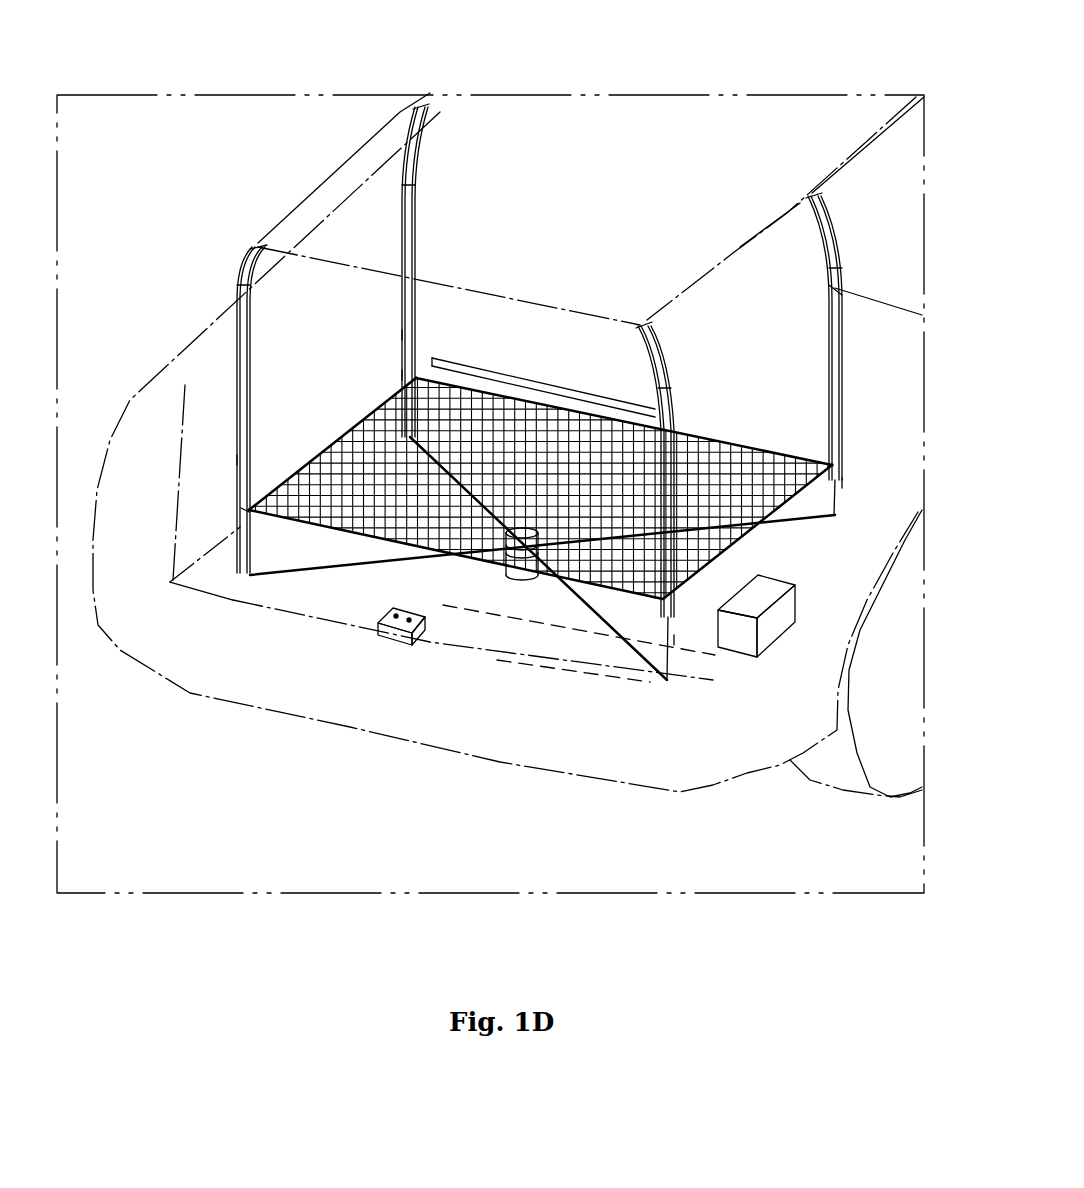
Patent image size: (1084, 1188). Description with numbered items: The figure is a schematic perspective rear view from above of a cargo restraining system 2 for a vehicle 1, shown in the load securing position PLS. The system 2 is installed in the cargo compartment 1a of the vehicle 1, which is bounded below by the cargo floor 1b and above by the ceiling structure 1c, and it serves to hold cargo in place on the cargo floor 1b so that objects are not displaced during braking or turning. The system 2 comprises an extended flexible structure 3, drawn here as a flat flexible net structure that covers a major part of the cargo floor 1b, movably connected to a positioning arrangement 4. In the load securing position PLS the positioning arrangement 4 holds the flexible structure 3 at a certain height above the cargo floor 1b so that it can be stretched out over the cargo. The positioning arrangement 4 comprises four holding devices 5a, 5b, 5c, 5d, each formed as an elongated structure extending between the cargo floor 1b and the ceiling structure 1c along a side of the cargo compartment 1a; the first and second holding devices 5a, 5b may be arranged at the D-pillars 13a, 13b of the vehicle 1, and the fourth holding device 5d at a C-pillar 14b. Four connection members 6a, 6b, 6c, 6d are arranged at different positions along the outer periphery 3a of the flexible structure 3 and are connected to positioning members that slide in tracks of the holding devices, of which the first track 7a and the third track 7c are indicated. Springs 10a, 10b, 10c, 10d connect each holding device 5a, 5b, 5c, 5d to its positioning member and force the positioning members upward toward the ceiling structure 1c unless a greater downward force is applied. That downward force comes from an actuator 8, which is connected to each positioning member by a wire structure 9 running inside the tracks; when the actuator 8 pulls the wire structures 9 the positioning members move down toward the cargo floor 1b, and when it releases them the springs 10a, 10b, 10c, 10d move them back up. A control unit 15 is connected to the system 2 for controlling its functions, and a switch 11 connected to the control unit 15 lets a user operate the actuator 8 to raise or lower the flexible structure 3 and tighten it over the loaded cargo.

The vehicle 1 is at (541, 346).
The cargo compartment 1a is at (501, 642).
The cargo floor 1b is at (448, 613).
The ceiling structure 1c is at (481, 184).
The cargo restraining system 2 is at (508, 445).
The flexible structure 3 is at (540, 307).
The outer periphery 3a is at (486, 467).
The positioning arrangement 4 is at (452, 488).
The first holding device 5a is at (202, 406).
The second holding device 5b is at (617, 597).
The third holding device 5c is at (446, 240).
The fourth holding device 5d is at (858, 542).
The first connection member 6a is at (149, 451).
The second connection member 6b is at (633, 767).
The third connection member 6c is at (251, 334).
The fourth connection member 6d is at (851, 672).
The first track 7a is at (161, 445).
The third track 7c is at (261, 312).
The actuator 8 is at (476, 678).
The wire structure 9 is at (422, 691).
The first spring 10a is at (269, 227).
The second spring 10b is at (701, 203).
The third spring 10c is at (337, 159).
The fourth spring 10d is at (781, 168).
The switch 11 is at (392, 714).
The D-pillar 13a is at (366, 382).
The D-pillar 13b is at (583, 722).
The C-pillar 14b is at (886, 169).
The control unit 15 is at (741, 720).
The load securing position PLS is at (490, 449).